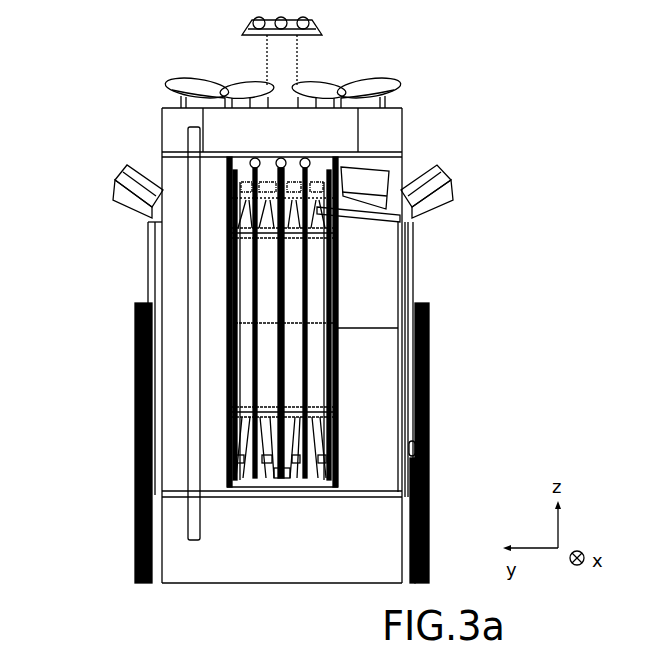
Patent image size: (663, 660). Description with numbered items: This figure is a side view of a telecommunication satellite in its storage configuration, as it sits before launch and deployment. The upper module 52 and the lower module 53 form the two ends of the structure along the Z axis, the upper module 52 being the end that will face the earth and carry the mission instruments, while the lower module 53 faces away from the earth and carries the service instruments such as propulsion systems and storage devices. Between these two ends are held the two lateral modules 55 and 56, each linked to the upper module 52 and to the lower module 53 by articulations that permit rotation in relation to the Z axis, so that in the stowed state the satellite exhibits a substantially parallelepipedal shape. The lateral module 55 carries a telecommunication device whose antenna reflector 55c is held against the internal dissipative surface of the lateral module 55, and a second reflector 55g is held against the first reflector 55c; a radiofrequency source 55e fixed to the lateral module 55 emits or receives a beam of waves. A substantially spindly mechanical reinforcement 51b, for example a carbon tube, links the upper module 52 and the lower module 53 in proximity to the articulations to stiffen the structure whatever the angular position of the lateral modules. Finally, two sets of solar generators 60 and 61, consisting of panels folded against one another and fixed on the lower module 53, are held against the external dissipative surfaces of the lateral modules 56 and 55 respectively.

The mechanical reinforcement 51b is at (193, 523).
The upper module 52 is at (393, 118).
The lower module 53 is at (268, 575).
The lateral module 55 is at (170, 175).
The antenna reflector 55c is at (240, 183).
The radiofrequency source 55e is at (116, 192).
The second reflector 55g is at (263, 160).
The lateral module 56 is at (395, 167).
The set of solar generators 60 is at (430, 420).
The set of solar generators 61 is at (135, 420).